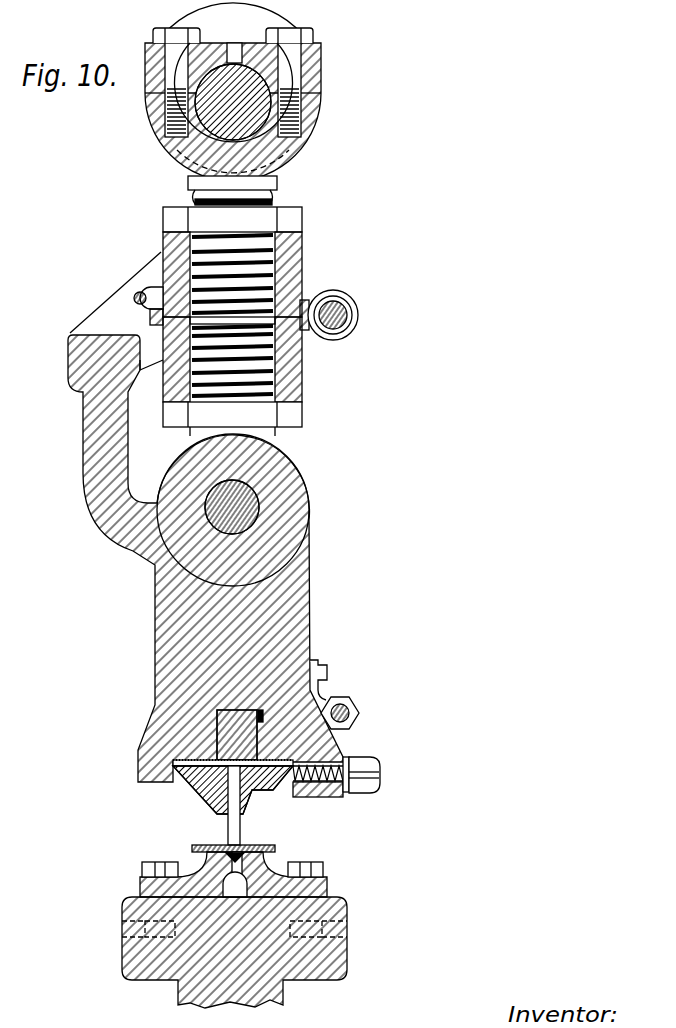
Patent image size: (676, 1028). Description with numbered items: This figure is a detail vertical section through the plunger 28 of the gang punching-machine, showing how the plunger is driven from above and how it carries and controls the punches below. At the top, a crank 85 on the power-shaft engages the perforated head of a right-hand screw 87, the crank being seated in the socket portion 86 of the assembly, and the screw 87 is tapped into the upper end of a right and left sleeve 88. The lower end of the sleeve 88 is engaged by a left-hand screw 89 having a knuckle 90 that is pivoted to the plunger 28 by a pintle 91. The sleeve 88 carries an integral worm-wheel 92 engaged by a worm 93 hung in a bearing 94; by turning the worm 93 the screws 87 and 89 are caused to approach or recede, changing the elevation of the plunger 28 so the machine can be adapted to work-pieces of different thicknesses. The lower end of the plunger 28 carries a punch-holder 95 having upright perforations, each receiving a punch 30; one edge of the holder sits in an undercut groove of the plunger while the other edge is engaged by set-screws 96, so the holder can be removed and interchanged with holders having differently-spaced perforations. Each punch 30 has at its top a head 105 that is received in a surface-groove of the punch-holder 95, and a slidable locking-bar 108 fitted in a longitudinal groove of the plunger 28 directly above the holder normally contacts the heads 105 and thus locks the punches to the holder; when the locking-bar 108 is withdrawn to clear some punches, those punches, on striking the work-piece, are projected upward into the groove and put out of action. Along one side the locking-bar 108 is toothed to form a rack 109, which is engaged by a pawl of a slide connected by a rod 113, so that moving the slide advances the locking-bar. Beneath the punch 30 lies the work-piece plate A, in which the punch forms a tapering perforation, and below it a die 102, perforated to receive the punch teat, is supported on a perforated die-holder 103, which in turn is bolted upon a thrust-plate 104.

The crank 85 is at (236, 76).
The split clamp socket 86 is at (285, 151).
The right-hand screw 87 is at (268, 203).
The right and left sleeve 88 is at (300, 268).
The left-hand screw 89 is at (300, 373).
The knuckle 90 is at (290, 478).
The pintle 91 is at (245, 510).
The worm-wheel 92 is at (160, 318).
The worm 93 is at (334, 315).
The bearing 94 is at (348, 303).
The plunger 28 is at (296, 628).
The rack 109 is at (263, 705).
The rod 113 is at (359, 714).
The locking-bar 108 is at (217, 727).
The head 105 is at (172, 763).
The punch-holder 95 is at (200, 790).
The punch 30 is at (238, 831).
The set-screw 96 is at (370, 780).
The die 102 is at (203, 851).
The die-holder 103 is at (244, 853).
The thrust-plate 104 is at (330, 946).
The plate A is at (272, 851).